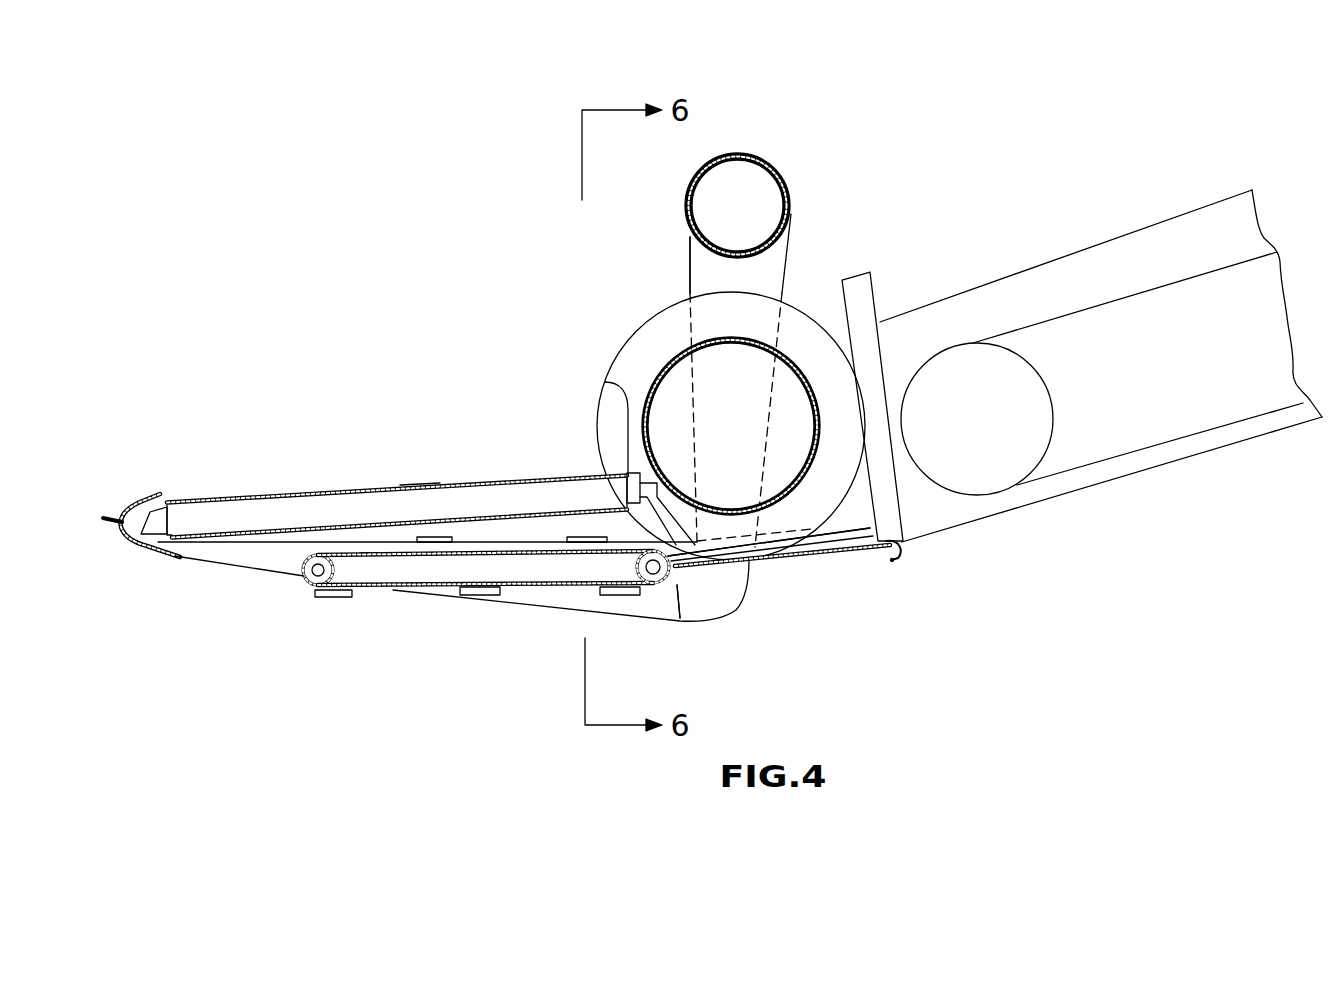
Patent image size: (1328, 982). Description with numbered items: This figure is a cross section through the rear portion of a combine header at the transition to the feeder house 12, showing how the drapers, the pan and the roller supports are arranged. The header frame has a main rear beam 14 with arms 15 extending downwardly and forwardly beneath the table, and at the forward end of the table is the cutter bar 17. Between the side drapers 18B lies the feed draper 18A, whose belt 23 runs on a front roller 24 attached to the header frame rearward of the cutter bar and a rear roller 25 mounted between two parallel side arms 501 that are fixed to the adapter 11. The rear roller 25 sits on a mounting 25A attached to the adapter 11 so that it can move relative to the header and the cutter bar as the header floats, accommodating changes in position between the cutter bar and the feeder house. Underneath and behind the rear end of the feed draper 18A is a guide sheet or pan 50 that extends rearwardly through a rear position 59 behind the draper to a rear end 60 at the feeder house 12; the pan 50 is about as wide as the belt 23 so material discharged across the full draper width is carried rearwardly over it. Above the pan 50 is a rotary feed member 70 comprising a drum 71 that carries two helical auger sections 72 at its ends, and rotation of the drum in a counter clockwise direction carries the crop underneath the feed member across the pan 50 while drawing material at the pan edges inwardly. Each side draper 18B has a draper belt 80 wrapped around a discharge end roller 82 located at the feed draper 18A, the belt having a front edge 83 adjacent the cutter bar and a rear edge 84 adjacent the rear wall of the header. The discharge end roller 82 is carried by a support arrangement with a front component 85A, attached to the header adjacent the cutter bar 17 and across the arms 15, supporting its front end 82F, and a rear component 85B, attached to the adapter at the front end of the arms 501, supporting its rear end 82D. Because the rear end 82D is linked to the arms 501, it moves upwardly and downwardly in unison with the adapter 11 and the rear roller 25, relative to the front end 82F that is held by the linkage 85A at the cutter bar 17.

The adapter 11 is at (870, 303).
The feeder house 12 is at (1098, 205).
The main rear beam 14 is at (771, 162).
The arms 15 is at (773, 260).
The cutter bar 17 is at (127, 537).
The feed draper 18A is at (377, 553).
The side draper 18B is at (423, 482).
The belt 23 is at (392, 590).
The front roller 24 is at (313, 590).
The rear roller 25 is at (660, 593).
The mounting 25A is at (650, 570).
The pan 50 is at (792, 560).
The side arms 501 is at (843, 535).
The rear position 59 is at (677, 585).
The rear end 60 is at (893, 555).
The rotary feed member 70 is at (651, 318).
The drum 71 is at (682, 300).
The helical auger sections 72 is at (640, 357).
The draper belt 80 is at (298, 492).
The discharge end roller 82 is at (250, 508).
The rear end of the discharge end roller 82D is at (622, 486).
The front end of the discharge end roller 82F is at (195, 553).
The front edge 83 is at (195, 498).
The rear edge 84 is at (605, 382).
The front support component 85A is at (150, 523).
The rear support component 85B is at (663, 503).